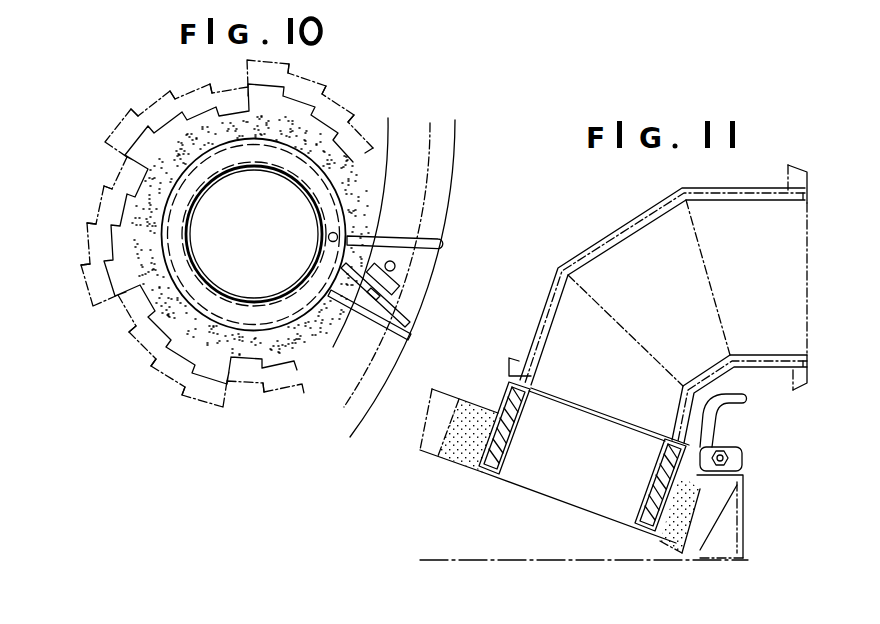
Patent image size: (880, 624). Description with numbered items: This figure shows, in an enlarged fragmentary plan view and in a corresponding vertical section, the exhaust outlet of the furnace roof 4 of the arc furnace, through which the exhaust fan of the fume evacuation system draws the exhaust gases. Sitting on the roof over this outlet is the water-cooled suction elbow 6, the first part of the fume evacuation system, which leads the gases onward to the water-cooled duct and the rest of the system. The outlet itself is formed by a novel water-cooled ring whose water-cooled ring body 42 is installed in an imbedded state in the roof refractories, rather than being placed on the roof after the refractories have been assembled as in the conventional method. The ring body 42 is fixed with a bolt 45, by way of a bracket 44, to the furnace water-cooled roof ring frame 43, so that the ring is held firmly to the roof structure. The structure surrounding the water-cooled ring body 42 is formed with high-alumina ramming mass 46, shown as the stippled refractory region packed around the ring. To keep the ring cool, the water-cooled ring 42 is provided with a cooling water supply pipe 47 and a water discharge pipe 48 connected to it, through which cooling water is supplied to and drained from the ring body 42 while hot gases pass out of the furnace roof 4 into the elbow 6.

In FIG. 11, the furnace roof 4 is at (447, 396).
In FIG. 11, the water-cooled suction elbow 6 is at (614, 234).
In FIG. 10, the water-cooled ring body 42 is at (313, 160).
In FIG. 11, the water-cooled ring body 42 is at (490, 466).
In FIG. 10, the furnace water-cooled roof ring frame 43 is at (365, 383).
In FIG. 11, the furnace water-cooled roof ring frame 43 is at (745, 490).
In FIG. 10, the bracket 44 is at (400, 277).
In FIG. 11, the bracket 44 is at (743, 458).
In FIG. 10, the bolt 45 is at (390, 262).
In FIG. 11, the bolt 45 is at (726, 452).
In FIG. 10, the high-alumina ramming mass 46 is at (288, 128).
In FIG. 11, the high-alumina ramming mass 46 is at (457, 456).
In FIG. 10, the cooling water supply pipe 47 is at (431, 240).
In FIG. 11, the cooling water supply pipe 47 is at (742, 398).
In FIG. 10, the water discharge pipe 48 is at (406, 332).